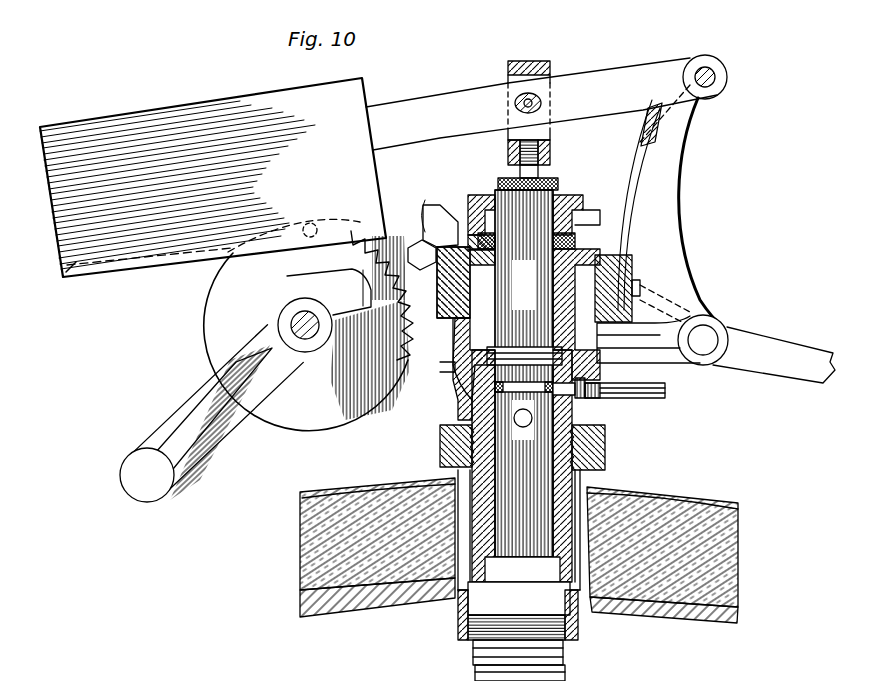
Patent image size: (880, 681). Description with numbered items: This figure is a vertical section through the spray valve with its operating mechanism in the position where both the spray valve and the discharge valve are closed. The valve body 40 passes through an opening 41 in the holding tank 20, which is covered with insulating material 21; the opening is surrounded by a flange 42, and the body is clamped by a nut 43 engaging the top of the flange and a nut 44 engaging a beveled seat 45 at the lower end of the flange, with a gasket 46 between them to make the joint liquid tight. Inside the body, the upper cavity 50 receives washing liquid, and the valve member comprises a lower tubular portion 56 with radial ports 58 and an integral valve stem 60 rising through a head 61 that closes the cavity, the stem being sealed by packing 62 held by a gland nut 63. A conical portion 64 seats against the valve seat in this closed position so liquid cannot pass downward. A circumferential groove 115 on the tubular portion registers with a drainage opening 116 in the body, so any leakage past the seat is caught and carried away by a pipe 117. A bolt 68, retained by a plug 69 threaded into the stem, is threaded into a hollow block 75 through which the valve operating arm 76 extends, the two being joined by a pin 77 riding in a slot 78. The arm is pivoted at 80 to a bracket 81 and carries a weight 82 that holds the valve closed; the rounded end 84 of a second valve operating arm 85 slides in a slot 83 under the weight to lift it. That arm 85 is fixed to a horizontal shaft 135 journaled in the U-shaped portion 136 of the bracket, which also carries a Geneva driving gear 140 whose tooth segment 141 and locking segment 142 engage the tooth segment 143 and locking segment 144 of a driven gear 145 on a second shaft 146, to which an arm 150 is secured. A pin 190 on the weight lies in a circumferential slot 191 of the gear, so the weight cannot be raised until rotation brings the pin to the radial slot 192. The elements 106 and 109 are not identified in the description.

The holding tank 20 is at (699, 628).
The insulating material 21 is at (740, 588).
The valve body 40 is at (440, 428).
The opening 41 is at (423, 468).
The flange 42 is at (613, 492).
The nut 43 is at (600, 450).
The nut 44 is at (578, 648).
The beveled seat 45 is at (586, 616).
The gasket 46 is at (446, 600).
The upper cavity 50 is at (648, 339).
The lower tubular portion 56 is at (519, 585).
The radial ports 58 is at (521, 428).
The valve stem 60 is at (524, 373).
The head 61 is at (576, 241).
The packing 62 is at (467, 276).
The gland nut 63 is at (585, 204).
The conical portion 64 is at (518, 352).
The bolt 68 is at (540, 172).
The plug 69 is at (560, 186).
The hollow block 75 is at (536, 63).
The valve operating arm 76 is at (467, 130).
The pin 77 is at (540, 97).
The slot 78 is at (545, 101).
The pivot 80 is at (718, 75).
The bracket 81 is at (683, 251).
The weight 82 is at (194, 110).
The slot 83 is at (70, 278).
The rounded and enlarged end 84 is at (150, 497).
The valve operating arm 85 is at (170, 428).
The sector cross-section 106 is at (595, 568).
The lower coupling 109 is at (570, 672).
The circumferential groove 115 is at (452, 402).
The drainage opening 116 is at (604, 420).
The pipe 117 is at (666, 420).
The horizontal shaft 135 is at (278, 368).
The U-shaped portion 136 is at (307, 290).
The Geneva driving gear 140 is at (215, 296).
The tooth segment 141 is at (308, 262).
The locking segment 142 is at (403, 379).
The tooth segment 143 is at (382, 231).
The locking segment 144 is at (392, 192).
The driven gear 145 is at (700, 278).
The second shaft 146 is at (707, 356).
The arm 150 is at (800, 320).
The pin 190 is at (315, 226).
The circumferential slot 191 is at (292, 224).
The radial slot 192 is at (230, 270).